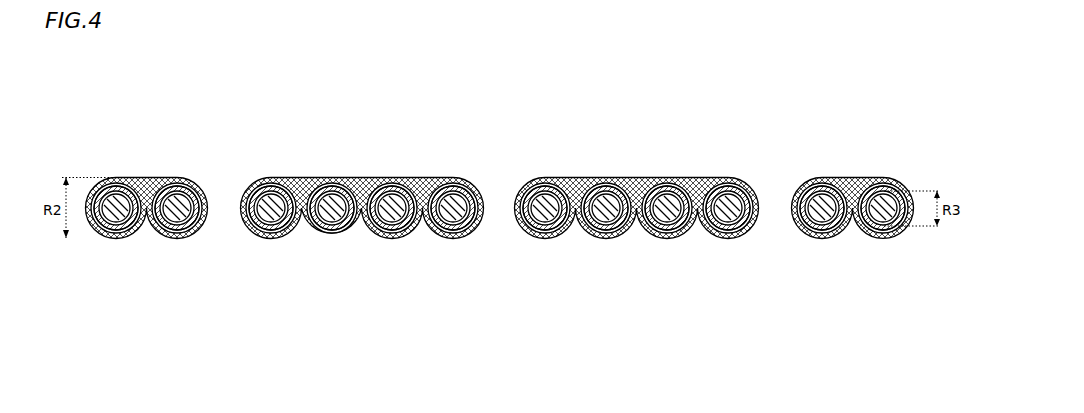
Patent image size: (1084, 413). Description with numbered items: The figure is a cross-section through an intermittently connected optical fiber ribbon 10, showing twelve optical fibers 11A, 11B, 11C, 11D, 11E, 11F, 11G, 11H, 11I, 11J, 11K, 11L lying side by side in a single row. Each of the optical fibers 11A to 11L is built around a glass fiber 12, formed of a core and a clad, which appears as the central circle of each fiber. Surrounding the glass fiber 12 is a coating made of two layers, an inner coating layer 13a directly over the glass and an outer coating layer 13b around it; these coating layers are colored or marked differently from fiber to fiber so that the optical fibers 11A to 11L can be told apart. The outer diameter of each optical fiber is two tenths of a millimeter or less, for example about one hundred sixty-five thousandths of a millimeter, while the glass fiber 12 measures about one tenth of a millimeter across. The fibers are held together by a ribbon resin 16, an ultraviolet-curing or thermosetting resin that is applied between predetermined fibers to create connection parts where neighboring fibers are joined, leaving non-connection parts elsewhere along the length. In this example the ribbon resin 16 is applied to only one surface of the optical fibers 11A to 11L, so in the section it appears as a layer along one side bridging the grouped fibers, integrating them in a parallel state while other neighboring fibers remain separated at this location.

The optical fiber ribbon 10 is at (617, 137).
The optical fiber 11A is at (111, 238).
The optical fiber 11B is at (172, 238).
The optical fiber 11C is at (266, 238).
The optical fiber 11D is at (327, 238).
The optical fiber 11E is at (410, 206).
The optical fiber 11F is at (448, 238).
The optical fiber 11G is at (540, 238).
The optical fiber 11H is at (601, 238).
The optical fiber 11I is at (662, 238).
The optical fiber 11J is at (723, 238).
The optical fiber 11K is at (817, 238).
The optical fiber 11L is at (878, 238).
The glass fiber 12 is at (373, 178).
The inner coating layer 13a is at (398, 178).
The outer coating layer 13b is at (415, 178).
The ribbon resin 16 is at (309, 177).